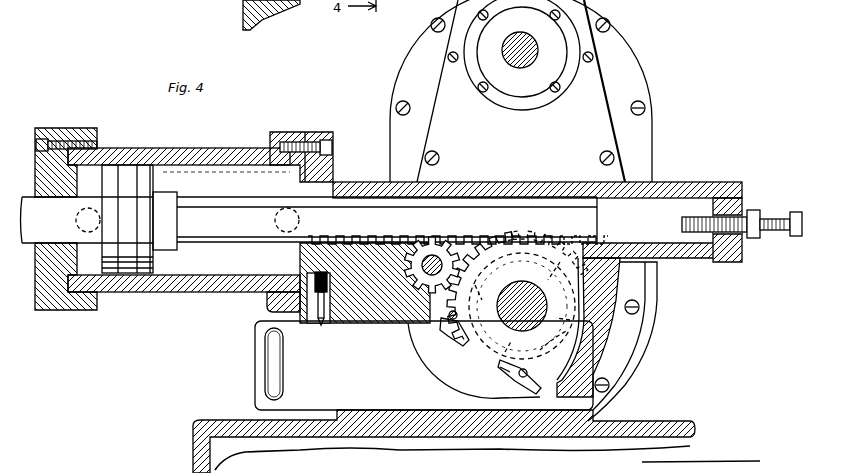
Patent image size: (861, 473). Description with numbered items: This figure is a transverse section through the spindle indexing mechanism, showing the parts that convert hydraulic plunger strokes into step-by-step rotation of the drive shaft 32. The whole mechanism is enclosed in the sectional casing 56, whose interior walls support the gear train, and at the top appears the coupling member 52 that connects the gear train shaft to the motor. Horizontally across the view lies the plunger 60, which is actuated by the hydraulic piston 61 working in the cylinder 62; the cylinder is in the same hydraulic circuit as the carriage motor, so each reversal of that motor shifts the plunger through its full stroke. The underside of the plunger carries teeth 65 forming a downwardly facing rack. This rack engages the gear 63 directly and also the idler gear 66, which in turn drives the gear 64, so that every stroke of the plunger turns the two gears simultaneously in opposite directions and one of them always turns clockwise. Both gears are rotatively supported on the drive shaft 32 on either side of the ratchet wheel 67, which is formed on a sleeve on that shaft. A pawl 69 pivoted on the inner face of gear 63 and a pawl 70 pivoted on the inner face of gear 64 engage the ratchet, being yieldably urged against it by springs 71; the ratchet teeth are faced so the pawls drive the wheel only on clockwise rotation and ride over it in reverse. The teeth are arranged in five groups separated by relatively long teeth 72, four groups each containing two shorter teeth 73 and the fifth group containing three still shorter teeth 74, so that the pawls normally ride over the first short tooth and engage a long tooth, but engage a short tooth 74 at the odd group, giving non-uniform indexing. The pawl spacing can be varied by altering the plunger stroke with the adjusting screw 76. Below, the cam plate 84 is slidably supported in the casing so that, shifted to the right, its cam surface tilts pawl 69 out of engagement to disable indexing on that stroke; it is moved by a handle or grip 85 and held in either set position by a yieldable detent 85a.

The drive shaft 32 is at (519, 289).
The coupling member 52 is at (517, 44).
The sectional casing 56 is at (404, 77).
The plunger 60 is at (543, 197).
The hydraulic piston 61 is at (118, 276).
The cylinder 62 is at (228, 160).
The gear 63 is at (549, 240).
The gear 64 is at (600, 250).
The teeth 65 is at (391, 237).
The idler gear 66 is at (408, 274).
The ratchet wheel 67 is at (612, 336).
The pawl 69 is at (500, 368).
The pawl 70 is at (507, 298).
The springs 71 is at (468, 346).
The teeth 72 is at (522, 306).
The teeth 73 is at (577, 328).
The teeth 74 is at (505, 310).
The adjusting screw 76 is at (766, 217).
The cam plate 84 is at (407, 390).
The handle or grip 85 is at (268, 369).
The yieldable detent 85a is at (318, 323).